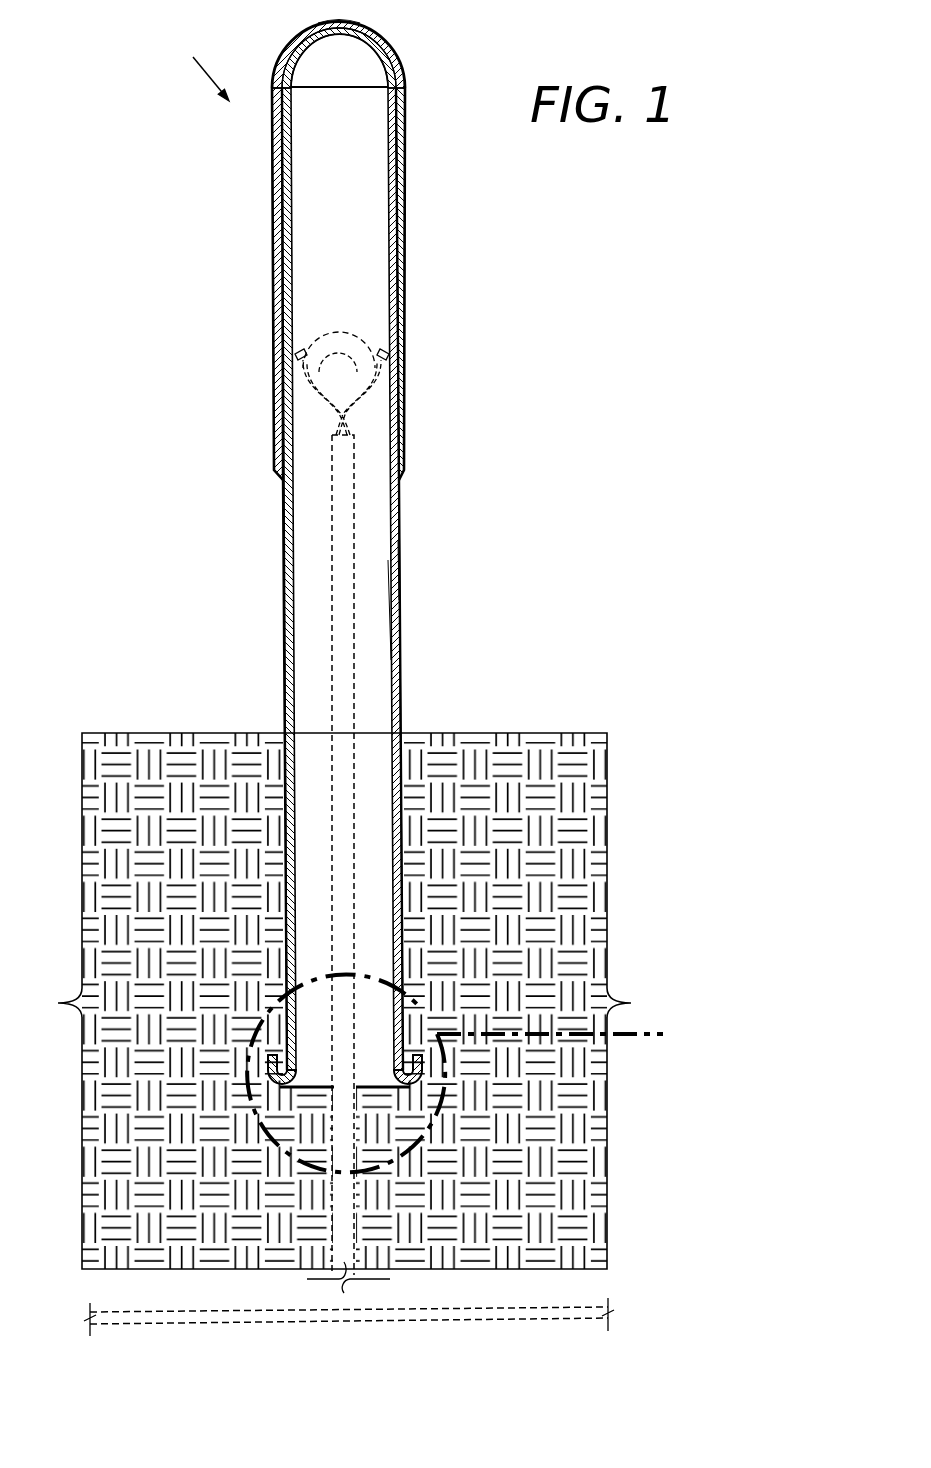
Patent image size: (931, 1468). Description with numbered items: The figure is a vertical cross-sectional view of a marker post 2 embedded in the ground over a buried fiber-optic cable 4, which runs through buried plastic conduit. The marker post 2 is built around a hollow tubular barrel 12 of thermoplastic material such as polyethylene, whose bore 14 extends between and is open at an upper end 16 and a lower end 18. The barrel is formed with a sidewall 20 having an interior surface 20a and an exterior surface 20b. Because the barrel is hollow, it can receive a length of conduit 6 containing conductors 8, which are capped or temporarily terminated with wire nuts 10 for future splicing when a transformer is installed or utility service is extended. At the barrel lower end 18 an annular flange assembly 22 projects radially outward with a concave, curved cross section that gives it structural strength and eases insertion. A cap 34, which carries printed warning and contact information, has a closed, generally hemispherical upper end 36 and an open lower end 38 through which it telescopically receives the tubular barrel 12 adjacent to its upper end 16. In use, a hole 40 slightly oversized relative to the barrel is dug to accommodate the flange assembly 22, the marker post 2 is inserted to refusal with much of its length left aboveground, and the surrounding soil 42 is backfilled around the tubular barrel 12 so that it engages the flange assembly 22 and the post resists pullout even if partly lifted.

The marker post 2 is at (417, 608).
The buried fiber-optic cable 4 is at (148, 1312).
The conduit 6 is at (332, 862).
The conductors 8 is at (342, 386).
The wire nuts 10 is at (339, 340).
The tubular barrel 12 is at (283, 652).
The bore 14 is at (292, 188).
The upper end 16 is at (365, 87).
The lower end 18 is at (280, 1087).
The sidewall 20 is at (401, 670).
The interior surface 20a is at (398, 642).
The exterior surface 20b is at (402, 553).
The annular flange assembly 22 is at (385, 1086).
The cap 34 is at (373, 32).
The closed upper end 36 is at (338, 20).
The open lower end 38 is at (278, 482).
The hole 40 is at (295, 791).
The surrounding soil 42 is at (101, 733).